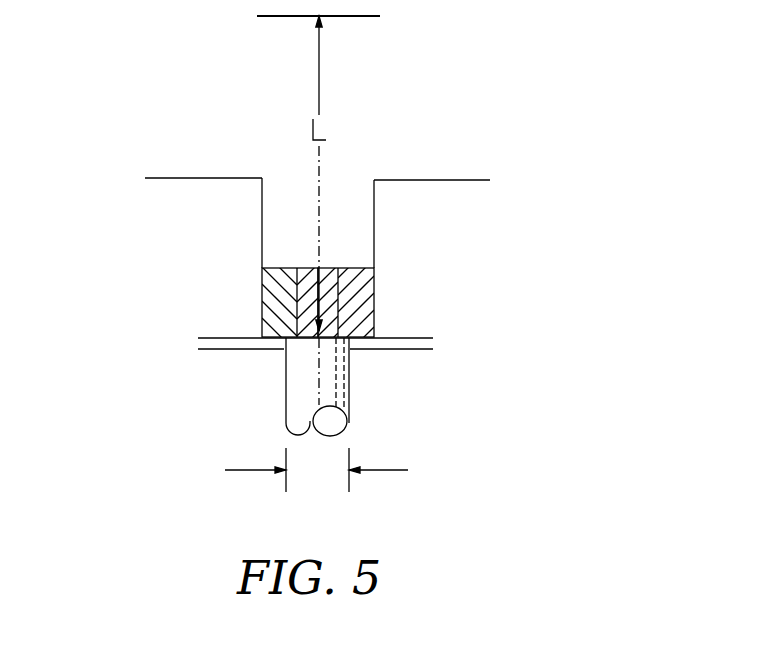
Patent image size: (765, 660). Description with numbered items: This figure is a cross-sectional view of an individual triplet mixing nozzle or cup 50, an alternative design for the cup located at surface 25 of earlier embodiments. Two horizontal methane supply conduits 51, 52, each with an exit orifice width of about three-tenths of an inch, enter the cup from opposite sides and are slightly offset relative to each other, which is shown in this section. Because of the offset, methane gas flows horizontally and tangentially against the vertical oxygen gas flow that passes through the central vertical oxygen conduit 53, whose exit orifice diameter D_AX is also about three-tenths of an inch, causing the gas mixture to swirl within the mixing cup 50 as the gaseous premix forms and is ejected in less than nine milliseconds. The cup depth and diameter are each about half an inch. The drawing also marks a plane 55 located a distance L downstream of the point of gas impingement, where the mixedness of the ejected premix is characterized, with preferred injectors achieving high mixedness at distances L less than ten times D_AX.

The surface 25 is at (197, 178).
The triplet mixing nozzle or cup 50 is at (337, 177).
The horizontal methane supply conduit 51 is at (366, 299).
The horizontal methane supply conduit 52 is at (263, 305).
The central vertical oxygen conduit 53 is at (340, 383).
The plane 55 is at (392, 15).